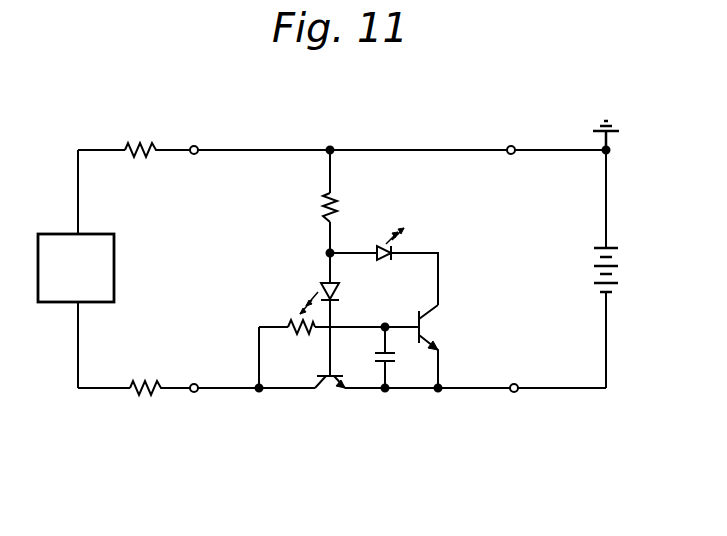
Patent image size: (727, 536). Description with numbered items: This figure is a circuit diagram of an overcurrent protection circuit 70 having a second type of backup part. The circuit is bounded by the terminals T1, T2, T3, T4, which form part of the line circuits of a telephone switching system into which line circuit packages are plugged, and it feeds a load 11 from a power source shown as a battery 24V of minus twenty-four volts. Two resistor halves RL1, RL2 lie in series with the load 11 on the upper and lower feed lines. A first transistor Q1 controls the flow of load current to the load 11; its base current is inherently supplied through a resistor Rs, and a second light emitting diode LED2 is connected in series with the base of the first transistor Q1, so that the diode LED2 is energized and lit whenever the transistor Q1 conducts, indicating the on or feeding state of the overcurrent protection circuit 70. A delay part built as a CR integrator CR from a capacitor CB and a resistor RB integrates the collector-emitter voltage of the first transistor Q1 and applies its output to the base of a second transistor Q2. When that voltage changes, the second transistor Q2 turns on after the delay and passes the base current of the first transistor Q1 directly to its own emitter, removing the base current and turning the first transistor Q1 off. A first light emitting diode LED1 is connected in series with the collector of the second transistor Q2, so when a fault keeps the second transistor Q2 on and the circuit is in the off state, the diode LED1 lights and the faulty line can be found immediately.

The load 11 is at (50, 303).
The overcurrent protection circuit 70 is at (354, 178).
The terminal T1 is at (197, 144).
The terminal T2 is at (195, 383).
The terminal T3 is at (513, 144).
The terminal T4 is at (515, 383).
The load resistor half RL/2 RL1 is at (166, 179).
The load resistor half RL/2 RL2 is at (146, 396).
The resistor Rs is at (320, 207).
The first light emitting diode LED1 is at (402, 244).
The second light emitting diode LED2 is at (318, 282).
The CR integrator CR is at (339, 315).
The resistor RB is at (302, 335).
The capacitor CB is at (414, 358).
The first transistor Q1 is at (329, 392).
The second transistor Q2 is at (436, 330).
The battery 24V is at (630, 272).